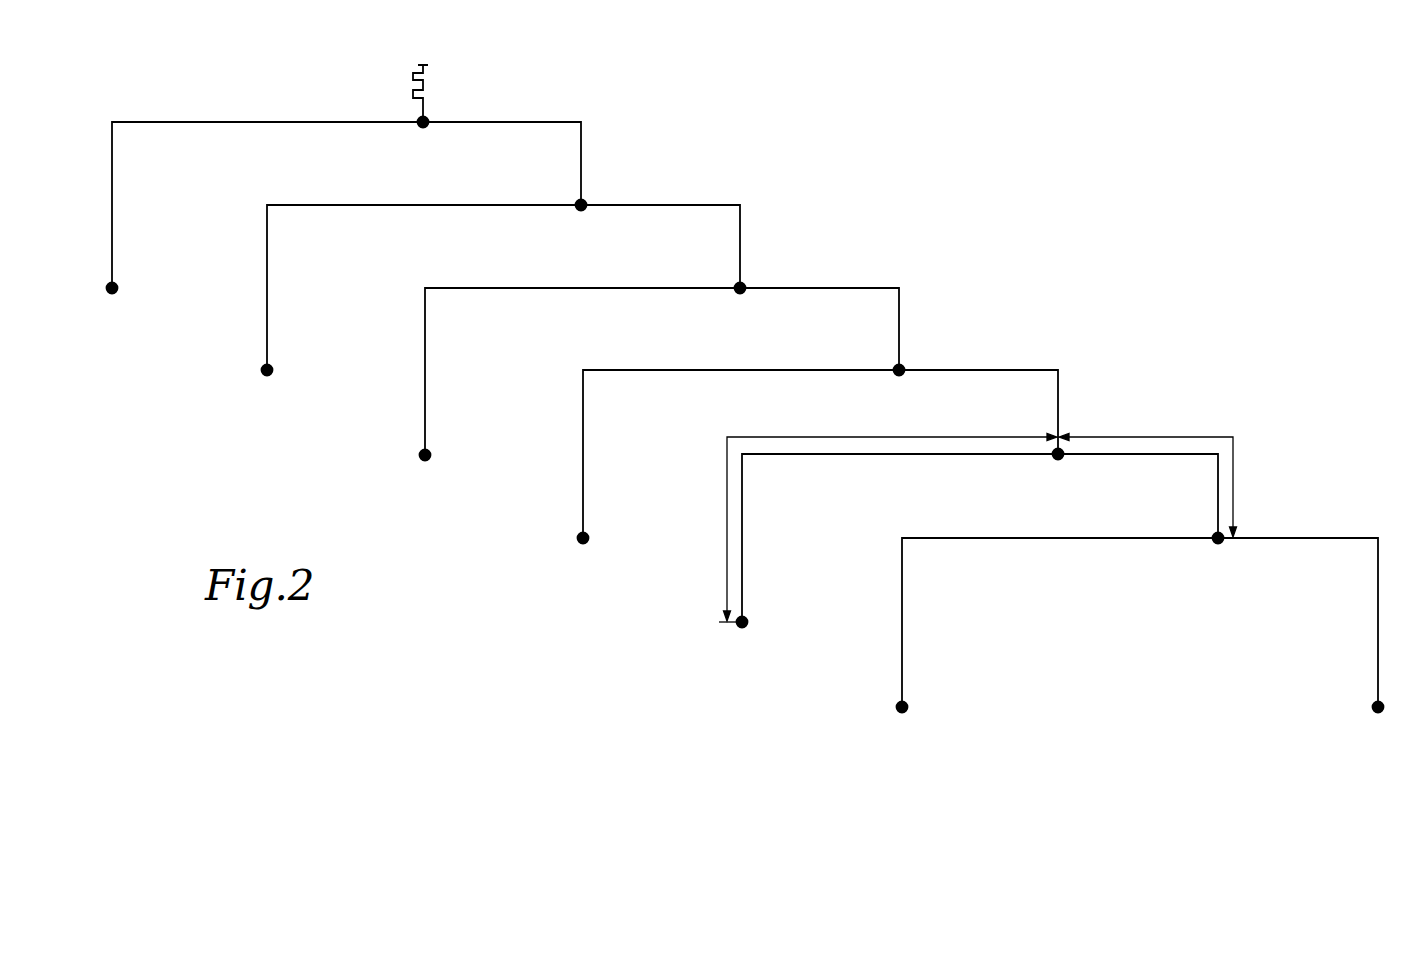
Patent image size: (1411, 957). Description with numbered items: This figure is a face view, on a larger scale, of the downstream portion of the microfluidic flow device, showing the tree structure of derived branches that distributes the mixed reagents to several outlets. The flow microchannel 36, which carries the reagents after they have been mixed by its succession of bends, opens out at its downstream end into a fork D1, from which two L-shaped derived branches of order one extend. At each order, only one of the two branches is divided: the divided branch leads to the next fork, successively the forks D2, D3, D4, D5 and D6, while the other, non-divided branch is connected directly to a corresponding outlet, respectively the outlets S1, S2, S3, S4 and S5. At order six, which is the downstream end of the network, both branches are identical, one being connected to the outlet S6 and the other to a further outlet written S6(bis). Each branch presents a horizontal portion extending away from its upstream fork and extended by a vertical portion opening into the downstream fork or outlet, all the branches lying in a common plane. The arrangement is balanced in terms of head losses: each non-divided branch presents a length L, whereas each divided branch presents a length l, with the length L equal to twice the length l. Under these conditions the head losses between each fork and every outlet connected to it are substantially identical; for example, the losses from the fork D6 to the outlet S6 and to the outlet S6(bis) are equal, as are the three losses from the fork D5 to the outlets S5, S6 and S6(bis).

The flow microchannel 36 is at (437, 71).
The fork D1 is at (423, 122).
The fork D2 is at (581, 205).
The fork D3 is at (740, 288).
The fork D4 is at (899, 370).
The fork D5 is at (1058, 455).
The fork D6 is at (1218, 538).
The outlet S1 is at (112, 294).
The outlet S2 is at (267, 376).
The outlet S3 is at (425, 461).
The outlet S4 is at (583, 544).
The outlet S5 is at (742, 628).
The outlet S6 is at (902, 713).
The length of non-divided derived branch L is at (888, 517).
The length of divided derived branch l is at (1148, 474).